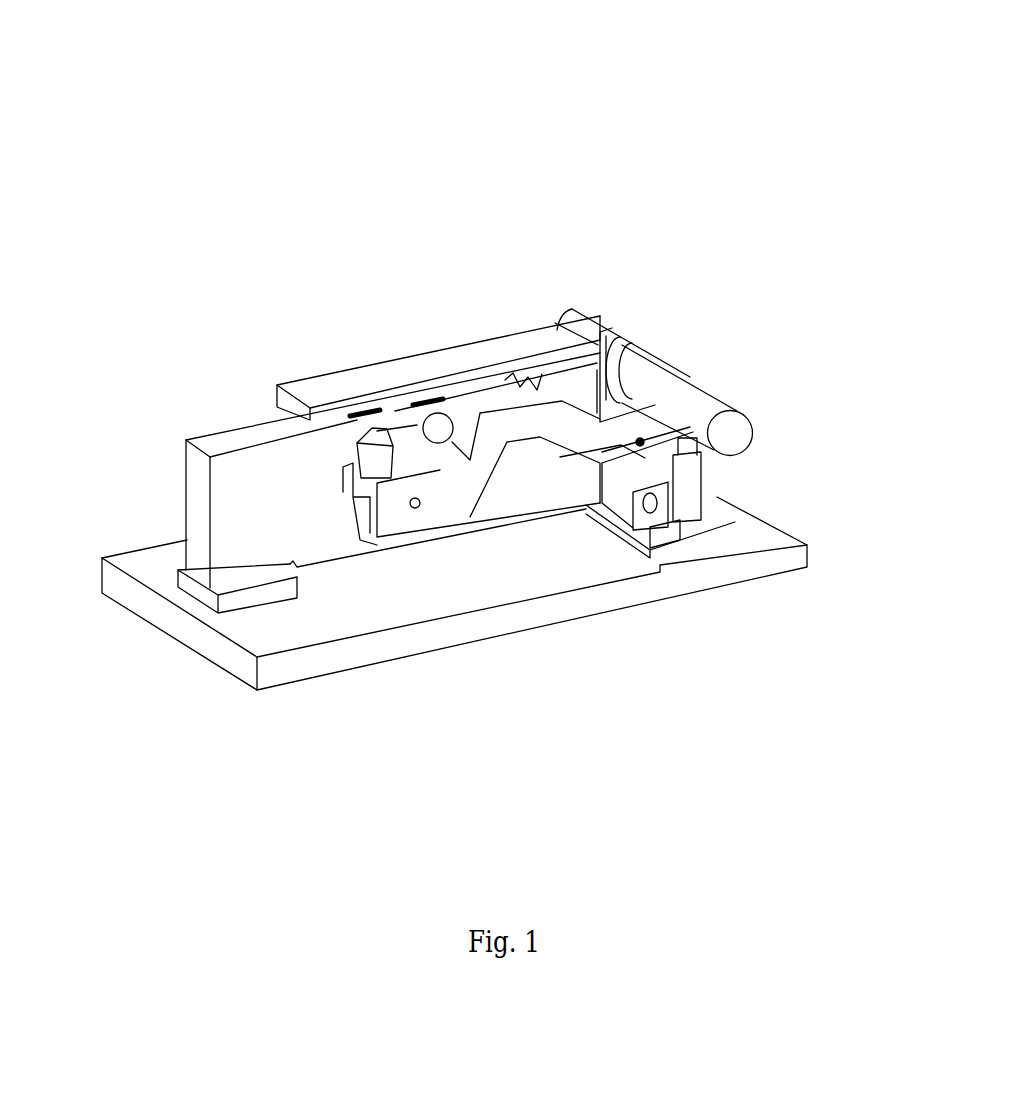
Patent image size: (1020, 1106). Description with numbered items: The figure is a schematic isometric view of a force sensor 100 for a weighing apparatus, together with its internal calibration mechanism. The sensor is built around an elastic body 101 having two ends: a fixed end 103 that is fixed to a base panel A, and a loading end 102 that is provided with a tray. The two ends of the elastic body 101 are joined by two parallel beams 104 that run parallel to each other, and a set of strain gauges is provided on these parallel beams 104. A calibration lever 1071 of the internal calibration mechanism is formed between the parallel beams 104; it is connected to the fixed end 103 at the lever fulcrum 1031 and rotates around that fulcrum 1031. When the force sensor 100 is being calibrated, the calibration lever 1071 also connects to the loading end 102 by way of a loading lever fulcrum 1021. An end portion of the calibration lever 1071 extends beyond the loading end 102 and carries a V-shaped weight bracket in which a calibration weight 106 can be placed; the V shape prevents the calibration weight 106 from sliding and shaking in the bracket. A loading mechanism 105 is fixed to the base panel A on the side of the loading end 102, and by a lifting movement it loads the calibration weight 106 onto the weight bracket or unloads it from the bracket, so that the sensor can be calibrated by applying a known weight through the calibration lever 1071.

The force sensor 100 is at (592, 207).
The base panel A is at (313, 617).
The elastic body 101 is at (342, 450).
The loading end 102 is at (550, 470).
The loading lever fulcrum 1021 is at (393, 448).
The fixed end 103 is at (270, 533).
The lever fulcrum 1031 is at (350, 470).
The parallel beams 104 is at (415, 427).
The loading mechanism 105 is at (703, 488).
The calibration weight 106 is at (740, 440).
The calibration lever 1071 is at (518, 428).